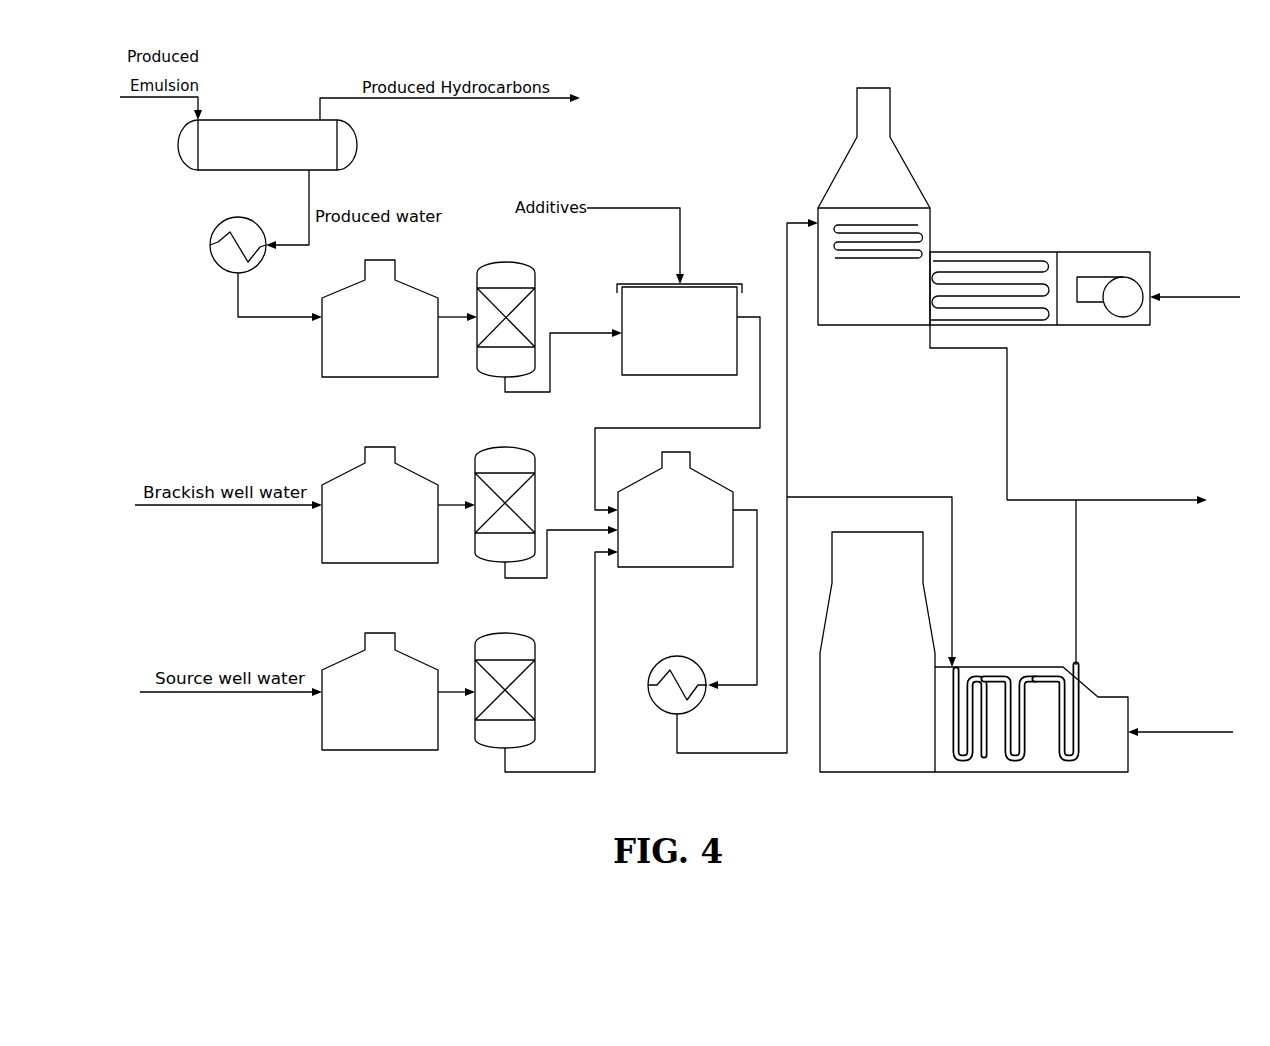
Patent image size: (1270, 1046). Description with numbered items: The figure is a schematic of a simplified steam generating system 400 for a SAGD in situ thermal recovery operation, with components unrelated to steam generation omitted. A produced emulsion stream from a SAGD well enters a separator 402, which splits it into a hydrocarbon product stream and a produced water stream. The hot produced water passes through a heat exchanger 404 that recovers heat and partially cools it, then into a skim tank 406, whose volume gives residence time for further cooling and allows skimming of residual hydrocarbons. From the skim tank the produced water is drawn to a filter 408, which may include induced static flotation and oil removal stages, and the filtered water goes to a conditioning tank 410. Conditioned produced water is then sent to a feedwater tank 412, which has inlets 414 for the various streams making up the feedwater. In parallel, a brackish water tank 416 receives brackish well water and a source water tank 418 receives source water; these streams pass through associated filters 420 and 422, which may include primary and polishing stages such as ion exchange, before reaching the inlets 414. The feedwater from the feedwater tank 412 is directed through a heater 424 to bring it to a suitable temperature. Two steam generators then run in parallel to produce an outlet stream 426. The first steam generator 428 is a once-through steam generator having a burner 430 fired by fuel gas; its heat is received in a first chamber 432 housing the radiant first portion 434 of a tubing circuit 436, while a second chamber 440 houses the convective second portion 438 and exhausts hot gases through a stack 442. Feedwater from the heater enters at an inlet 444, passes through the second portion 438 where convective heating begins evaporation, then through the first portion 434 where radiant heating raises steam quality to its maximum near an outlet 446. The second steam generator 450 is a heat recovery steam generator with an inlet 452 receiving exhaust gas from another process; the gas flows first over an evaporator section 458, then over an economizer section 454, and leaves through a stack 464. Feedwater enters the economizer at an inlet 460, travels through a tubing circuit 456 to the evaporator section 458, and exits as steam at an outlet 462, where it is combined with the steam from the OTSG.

The steam generating system 400 is at (210, 828).
The separator 402 is at (269, 117).
The heat exchanger 404 is at (210, 245).
The skim tank 406 is at (350, 378).
The filter 408 is at (500, 262).
The conditioning tank 410 is at (708, 284).
The feedwater tank 412 is at (675, 568).
The inlets 414 is at (611, 490).
The brackish water tank 416 is at (380, 563).
The source water tank 418 is at (380, 750).
The filter 420 is at (500, 447).
The filter 422 is at (500, 633).
The heater 424 is at (648, 685).
The outlet stream 426 is at (1140, 503).
The first steam generator 428 is at (1050, 155).
The burner 430 is at (1123, 277).
The first chamber 432 is at (1040, 328).
The first portion of the tubing circuit 434 is at (990, 261).
The tubing circuit 436 is at (941, 255).
The second portion of the tubing circuit 438 is at (918, 225).
The second chamber 440 is at (818, 300).
The stack 442 is at (857, 110).
The inlet 444 is at (818, 215).
The outlet 446 is at (930, 330).
The second steam generator 450 is at (1010, 611).
The inlet 452 is at (1128, 713).
The economizer section 454 is at (970, 782).
The tubing circuit 456 is at (995, 677).
The evaporator section 458 is at (1072, 782).
The inlet 460 is at (958, 672).
The outlet 462 is at (1078, 682).
The stack 464 is at (832, 550).